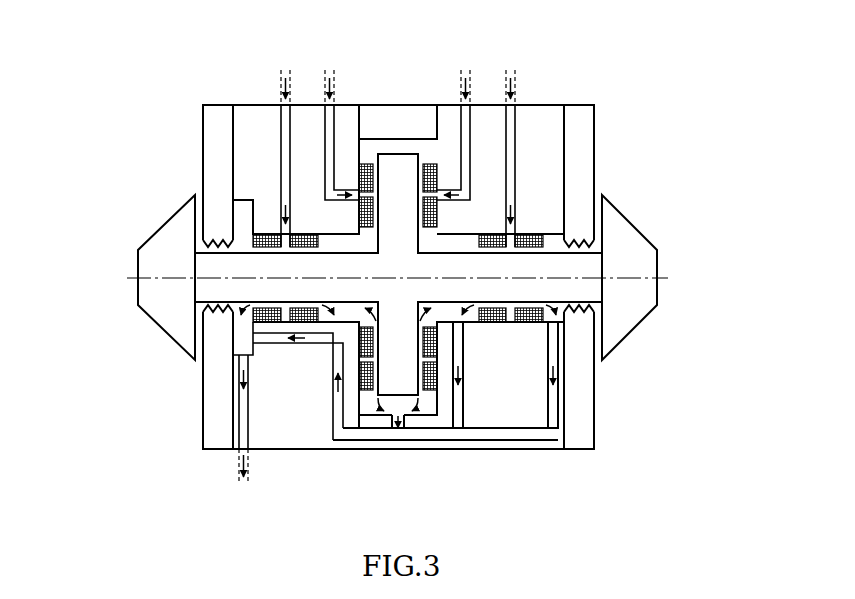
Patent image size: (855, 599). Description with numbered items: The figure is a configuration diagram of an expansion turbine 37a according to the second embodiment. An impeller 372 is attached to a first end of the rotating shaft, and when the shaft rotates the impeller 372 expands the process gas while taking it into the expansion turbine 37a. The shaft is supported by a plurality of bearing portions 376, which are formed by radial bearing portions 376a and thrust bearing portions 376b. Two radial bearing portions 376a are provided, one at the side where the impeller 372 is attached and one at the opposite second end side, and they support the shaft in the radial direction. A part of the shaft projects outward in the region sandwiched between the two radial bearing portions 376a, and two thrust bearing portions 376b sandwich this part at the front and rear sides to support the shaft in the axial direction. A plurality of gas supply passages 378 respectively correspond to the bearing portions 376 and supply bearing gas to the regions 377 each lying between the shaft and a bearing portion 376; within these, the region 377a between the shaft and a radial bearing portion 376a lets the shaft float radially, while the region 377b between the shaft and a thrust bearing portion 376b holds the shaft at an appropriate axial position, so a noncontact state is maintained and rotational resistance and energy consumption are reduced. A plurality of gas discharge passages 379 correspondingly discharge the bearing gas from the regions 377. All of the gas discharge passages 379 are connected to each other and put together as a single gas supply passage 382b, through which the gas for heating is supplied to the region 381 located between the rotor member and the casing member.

The expansion turbine 37a is at (379, 76).
The impeller 372 is at (170, 220).
The bearing portion 376 is at (513, 371).
The radial bearing portion 376a is at (530, 322).
The thrust bearing portion 376b is at (432, 377).
The region 377 is at (513, 184).
The region between the rotating shaft and the radial bearing portion 377a is at (532, 250).
The region between the rotating shaft and the thrust bearing portion 377b is at (425, 180).
The gas supply passage 378 is at (267, 105).
The gas discharge passage 379 is at (248, 418).
The region 381 is at (243, 333).
The gas supply passage 382b is at (307, 344).